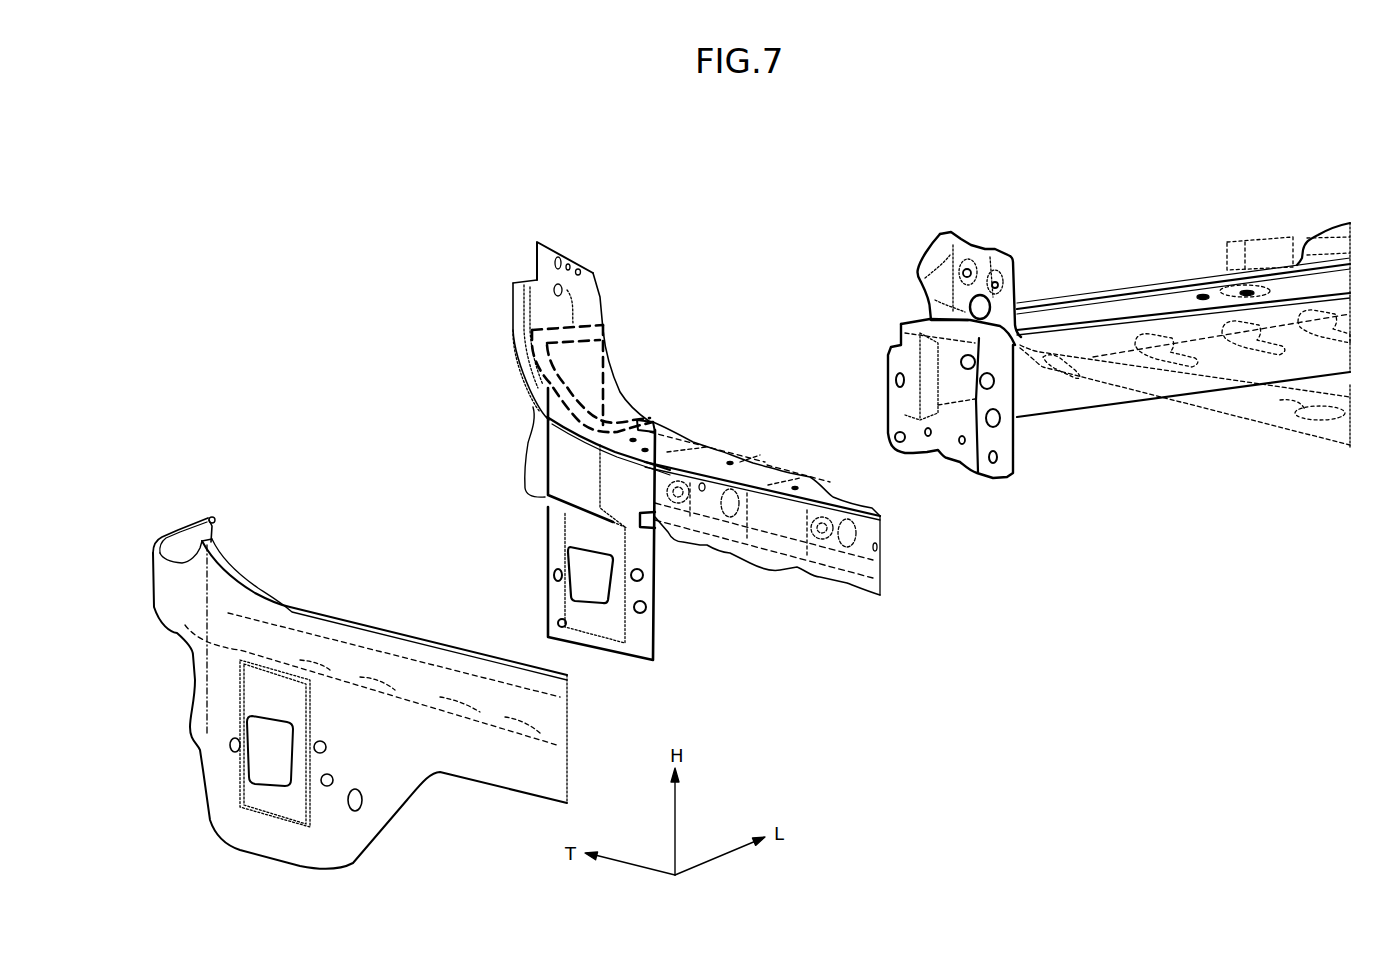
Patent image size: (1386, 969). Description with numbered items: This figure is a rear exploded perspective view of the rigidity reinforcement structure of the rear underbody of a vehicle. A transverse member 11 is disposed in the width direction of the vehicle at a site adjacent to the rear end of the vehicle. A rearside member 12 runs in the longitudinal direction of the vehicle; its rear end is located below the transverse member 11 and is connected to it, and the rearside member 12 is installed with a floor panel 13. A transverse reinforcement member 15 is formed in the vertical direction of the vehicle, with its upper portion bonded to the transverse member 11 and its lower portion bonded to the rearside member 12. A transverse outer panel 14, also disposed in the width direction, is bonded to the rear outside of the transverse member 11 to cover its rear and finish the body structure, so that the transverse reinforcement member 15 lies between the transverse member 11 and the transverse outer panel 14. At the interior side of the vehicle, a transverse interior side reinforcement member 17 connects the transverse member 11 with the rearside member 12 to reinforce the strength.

The transverse member 11 is at (758, 470).
The rearside member 12 is at (1047, 400).
The floor panel 13 is at (1265, 413).
The transverse outer panel 14 is at (300, 610).
The transverse reinforcement member 15 is at (545, 541).
The transverse interior side reinforcement member 17 is at (1007, 282).